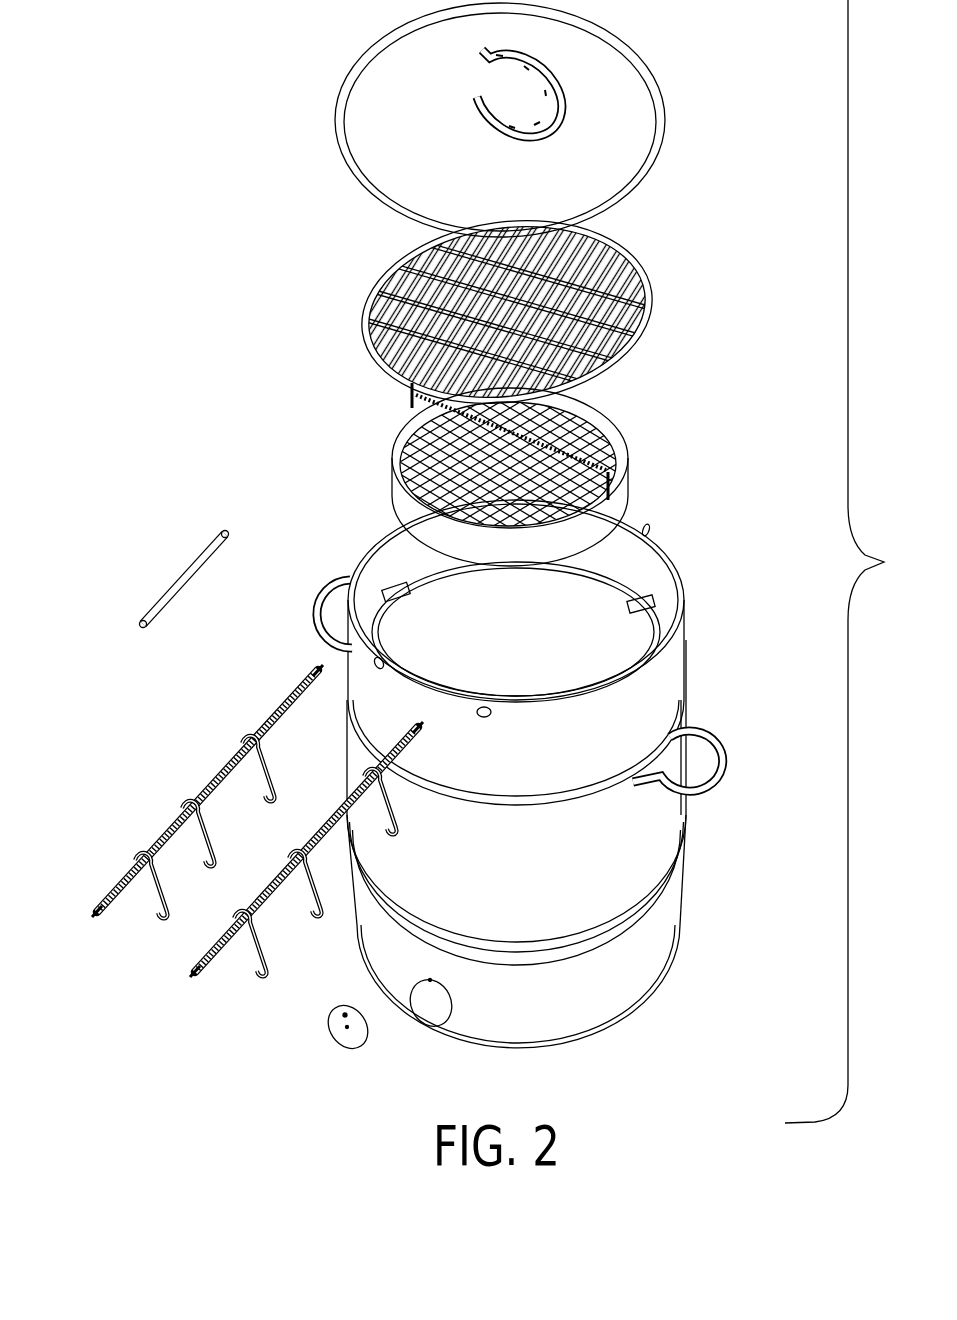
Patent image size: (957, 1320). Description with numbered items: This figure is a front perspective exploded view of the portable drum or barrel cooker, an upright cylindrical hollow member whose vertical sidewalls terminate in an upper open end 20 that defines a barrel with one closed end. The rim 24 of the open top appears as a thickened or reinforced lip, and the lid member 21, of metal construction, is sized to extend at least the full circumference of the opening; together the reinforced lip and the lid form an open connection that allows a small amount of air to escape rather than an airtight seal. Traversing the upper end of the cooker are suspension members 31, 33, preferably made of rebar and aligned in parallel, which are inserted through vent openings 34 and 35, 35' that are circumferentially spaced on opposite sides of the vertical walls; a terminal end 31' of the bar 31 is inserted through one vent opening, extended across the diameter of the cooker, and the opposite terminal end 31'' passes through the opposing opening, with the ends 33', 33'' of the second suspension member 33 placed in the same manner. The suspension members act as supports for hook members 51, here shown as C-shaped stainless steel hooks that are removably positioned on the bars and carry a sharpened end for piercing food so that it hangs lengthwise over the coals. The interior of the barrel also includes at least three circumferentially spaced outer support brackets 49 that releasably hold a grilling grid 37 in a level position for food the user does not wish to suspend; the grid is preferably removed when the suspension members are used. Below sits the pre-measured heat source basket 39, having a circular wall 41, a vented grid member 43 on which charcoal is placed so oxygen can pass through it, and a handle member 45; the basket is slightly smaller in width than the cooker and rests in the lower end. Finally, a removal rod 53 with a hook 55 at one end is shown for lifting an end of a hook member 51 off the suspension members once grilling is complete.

The upper open end 20 is at (612, 637).
The lid member 21 is at (607, 68).
The rim 24 is at (673, 545).
The suspension member 31 is at (306, 852).
The terminal end of suspension member 31' is at (154, 992).
The terminal end of suspension member 31'' is at (583, 795).
The suspension member 33 is at (174, 791).
The terminal end of suspension member 33' is at (65, 936).
The terminal end of suspension member 33'' is at (254, 683).
The vent opening 34 is at (380, 661).
The vent opening 35 is at (613, 703).
The vent opening 35' is at (679, 497).
The grilling grid 37 is at (641, 254).
The heat source basket 39 is at (641, 429).
The circular wall 41 is at (396, 488).
The grid member 43 is at (420, 435).
The handle member 45 is at (406, 390).
The outer support bracket 49 is at (657, 596).
The hook member 51 is at (136, 854).
The removal rod 53 is at (140, 623).
The hook 55 is at (224, 532).